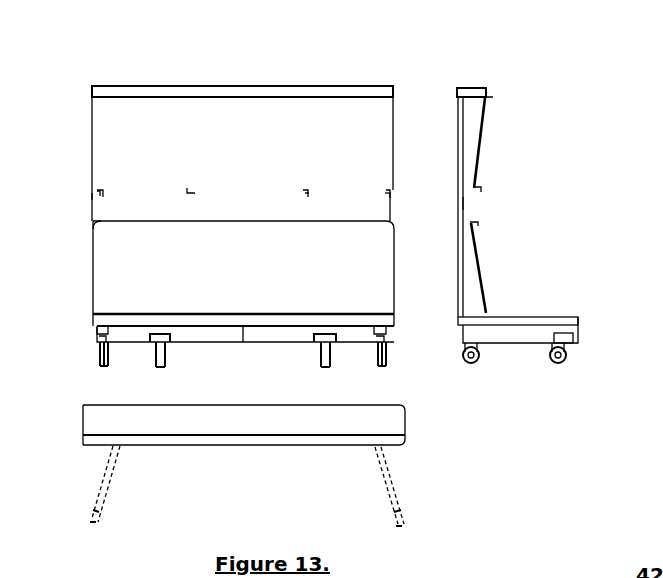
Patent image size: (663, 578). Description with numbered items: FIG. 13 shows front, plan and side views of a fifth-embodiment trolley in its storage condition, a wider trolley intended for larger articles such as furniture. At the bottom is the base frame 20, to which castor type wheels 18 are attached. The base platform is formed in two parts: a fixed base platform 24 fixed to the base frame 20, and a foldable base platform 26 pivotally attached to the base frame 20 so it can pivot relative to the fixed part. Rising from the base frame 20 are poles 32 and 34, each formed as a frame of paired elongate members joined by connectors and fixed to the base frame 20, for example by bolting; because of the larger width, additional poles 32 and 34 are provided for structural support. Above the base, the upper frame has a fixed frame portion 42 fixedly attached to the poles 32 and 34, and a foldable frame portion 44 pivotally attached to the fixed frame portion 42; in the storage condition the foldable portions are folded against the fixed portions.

The wheels 18 is at (172, 365).
The base frame 20 is at (120, 334).
The fixed base platform 24 is at (93, 314).
The foldable base platform 26 is at (103, 273).
The pole 32 is at (305, 192).
The pole 34 is at (188, 190).
The fixed frame portion 42 is at (96, 86).
The foldable frame portion 44 is at (108, 138).